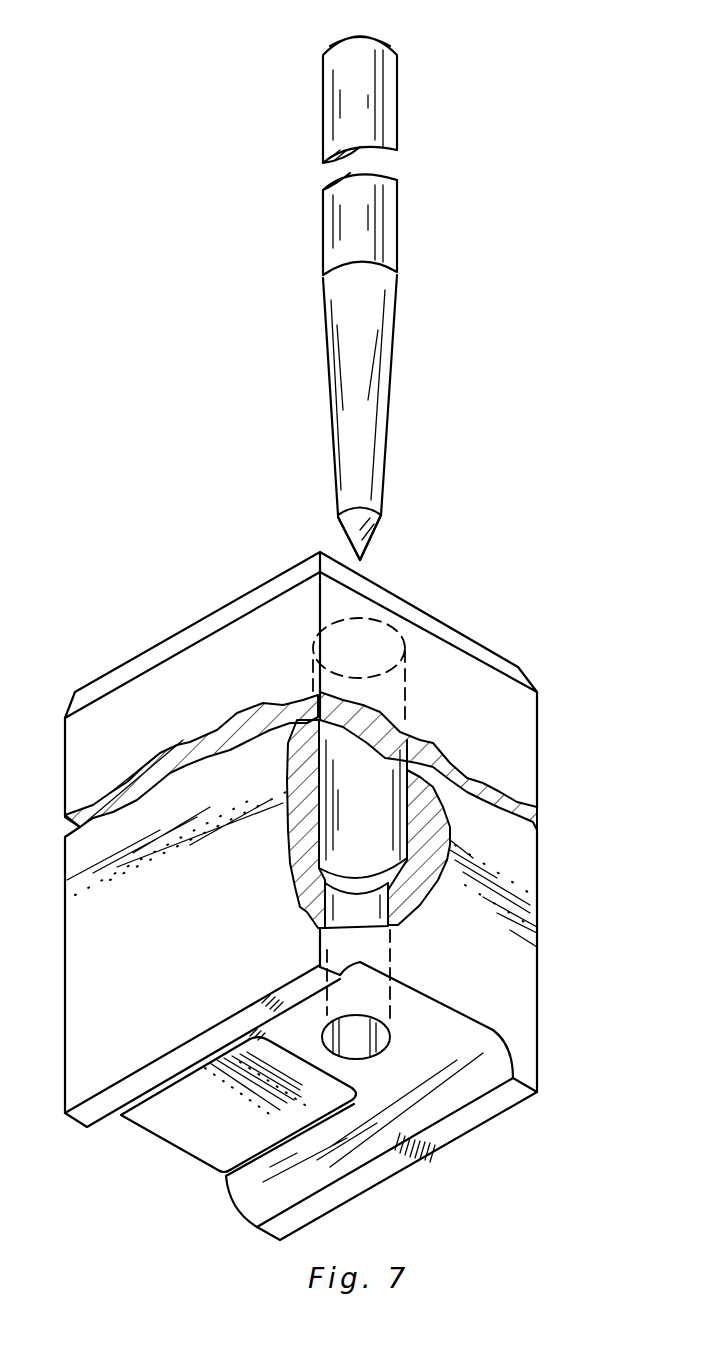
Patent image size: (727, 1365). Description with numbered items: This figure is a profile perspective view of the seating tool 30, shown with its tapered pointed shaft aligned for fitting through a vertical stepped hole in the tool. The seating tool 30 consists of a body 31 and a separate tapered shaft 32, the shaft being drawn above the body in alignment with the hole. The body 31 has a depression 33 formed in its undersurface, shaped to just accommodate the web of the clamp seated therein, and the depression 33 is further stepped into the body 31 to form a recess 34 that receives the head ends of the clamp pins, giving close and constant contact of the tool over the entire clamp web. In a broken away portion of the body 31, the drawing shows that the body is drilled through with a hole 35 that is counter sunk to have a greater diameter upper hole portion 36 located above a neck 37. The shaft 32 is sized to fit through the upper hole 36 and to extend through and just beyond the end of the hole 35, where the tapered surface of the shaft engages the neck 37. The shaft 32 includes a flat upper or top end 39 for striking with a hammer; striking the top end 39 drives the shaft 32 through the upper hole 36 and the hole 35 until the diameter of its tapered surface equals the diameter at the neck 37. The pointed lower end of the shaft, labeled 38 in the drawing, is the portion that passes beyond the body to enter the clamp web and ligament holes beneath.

The seating tool 30 is at (480, 605).
The seating tool body 31 is at (194, 928).
The tapered shaft 32 is at (330, 250).
The depression 33 is at (370, 1137).
The recess 34 is at (190, 1118).
The hole 35 is at (363, 910).
The upper hole portion 36 is at (383, 783).
The neck 37 is at (350, 878).
The pin tip 38 is at (350, 530).
The top end 39 is at (390, 42).